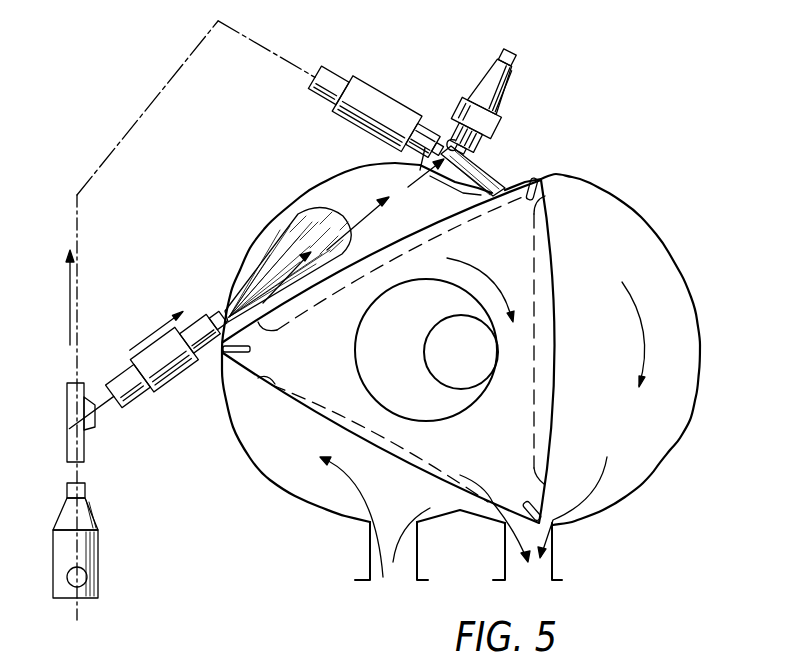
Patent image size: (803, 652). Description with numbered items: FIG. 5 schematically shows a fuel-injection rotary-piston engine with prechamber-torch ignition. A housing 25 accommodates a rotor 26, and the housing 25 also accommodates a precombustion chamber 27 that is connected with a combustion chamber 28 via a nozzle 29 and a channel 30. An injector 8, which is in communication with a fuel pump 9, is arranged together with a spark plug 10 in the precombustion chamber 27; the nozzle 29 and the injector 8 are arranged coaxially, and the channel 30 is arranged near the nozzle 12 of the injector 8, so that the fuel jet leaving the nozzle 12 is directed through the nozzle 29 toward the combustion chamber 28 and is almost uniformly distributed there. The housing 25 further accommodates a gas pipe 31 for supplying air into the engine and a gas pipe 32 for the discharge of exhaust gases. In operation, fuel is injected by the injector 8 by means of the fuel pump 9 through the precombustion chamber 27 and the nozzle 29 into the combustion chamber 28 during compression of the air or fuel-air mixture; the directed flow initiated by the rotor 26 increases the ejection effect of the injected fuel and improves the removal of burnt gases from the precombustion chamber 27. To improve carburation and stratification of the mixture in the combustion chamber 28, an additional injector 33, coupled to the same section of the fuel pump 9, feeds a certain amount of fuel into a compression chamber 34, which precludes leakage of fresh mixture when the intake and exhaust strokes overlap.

The injector 8 is at (360, 94).
The fuel pump 9 is at (92, 556).
The spark plug 10 is at (510, 78).
The nozzle of the injector 12 is at (430, 140).
The housing 25 is at (647, 222).
The rotor 26 is at (540, 313).
The precombustion chamber 27 is at (443, 133).
The combustion chamber 28 is at (513, 177).
The nozzle 29 is at (483, 177).
The channel 30 is at (423, 163).
The gas pipe 31 is at (368, 547).
The gas pipe 32 is at (553, 553).
The additional injector 33 is at (177, 367).
The compression chamber 34 is at (290, 225).